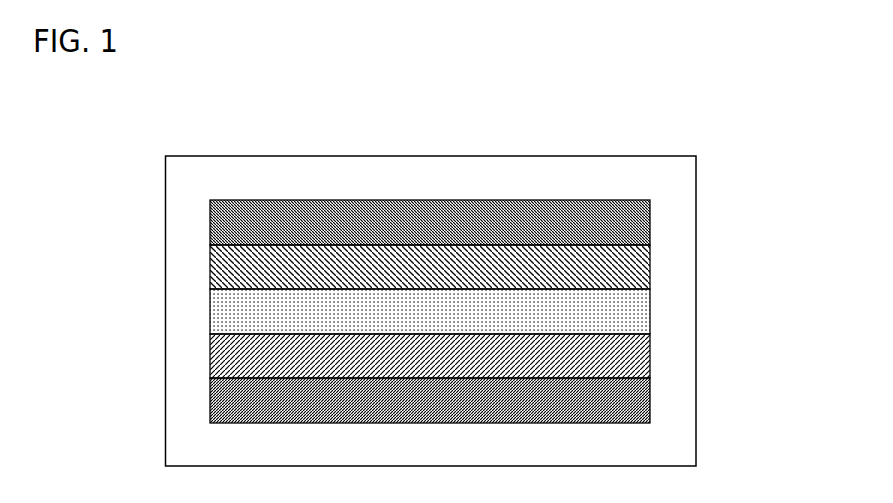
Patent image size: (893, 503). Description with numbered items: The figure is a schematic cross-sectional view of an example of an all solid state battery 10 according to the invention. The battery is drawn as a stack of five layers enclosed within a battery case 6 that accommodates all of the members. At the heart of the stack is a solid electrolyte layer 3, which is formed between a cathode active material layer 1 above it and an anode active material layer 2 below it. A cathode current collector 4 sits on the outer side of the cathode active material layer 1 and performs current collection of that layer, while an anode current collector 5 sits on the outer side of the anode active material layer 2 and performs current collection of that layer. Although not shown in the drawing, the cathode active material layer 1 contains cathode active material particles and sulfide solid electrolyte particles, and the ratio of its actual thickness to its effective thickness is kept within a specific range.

The all solid state battery 10 is at (680, 113).
The battery case 6 is at (670, 172).
The cathode current collector 4 is at (650, 212).
The cathode active material layer 1 is at (637, 258).
The solid electrolyte layer 3 is at (637, 302).
The anode active material layer 2 is at (637, 348).
The anode current collector 5 is at (637, 392).